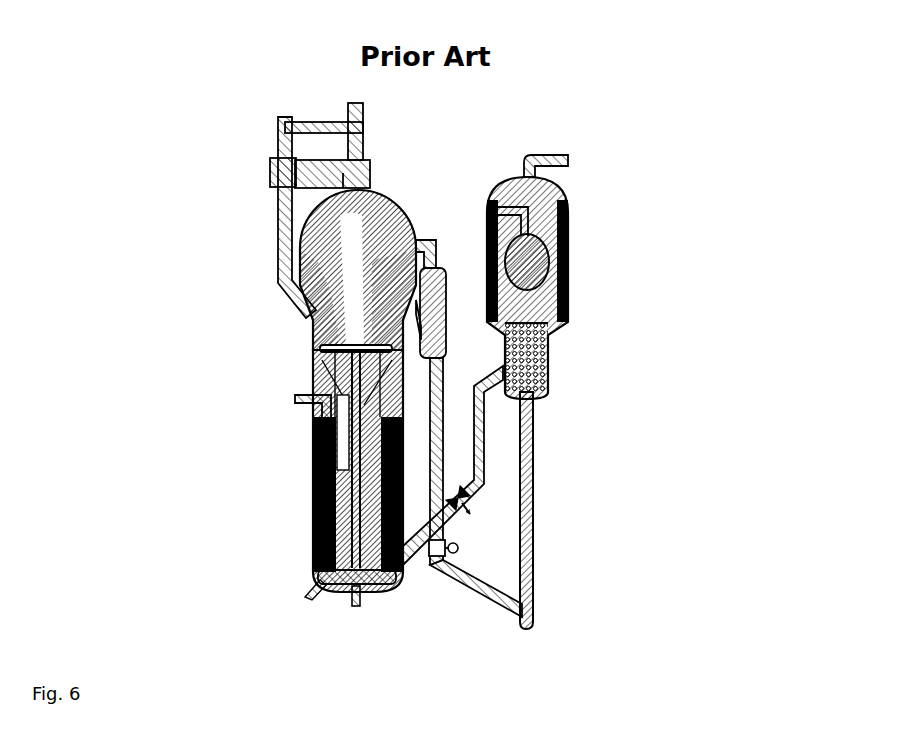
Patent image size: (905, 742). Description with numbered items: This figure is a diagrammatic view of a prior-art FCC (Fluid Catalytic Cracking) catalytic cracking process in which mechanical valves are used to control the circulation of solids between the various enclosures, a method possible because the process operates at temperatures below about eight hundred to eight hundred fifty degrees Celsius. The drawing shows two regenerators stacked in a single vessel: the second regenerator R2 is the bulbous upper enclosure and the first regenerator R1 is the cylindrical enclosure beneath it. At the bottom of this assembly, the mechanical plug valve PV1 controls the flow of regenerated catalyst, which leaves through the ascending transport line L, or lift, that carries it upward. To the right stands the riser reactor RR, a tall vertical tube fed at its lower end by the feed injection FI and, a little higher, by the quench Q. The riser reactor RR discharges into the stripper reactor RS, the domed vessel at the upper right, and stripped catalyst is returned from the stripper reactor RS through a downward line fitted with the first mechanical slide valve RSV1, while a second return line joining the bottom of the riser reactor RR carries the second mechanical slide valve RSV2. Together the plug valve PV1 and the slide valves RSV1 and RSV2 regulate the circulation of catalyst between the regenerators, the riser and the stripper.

The regenerator No. 2 R2 is at (345, 252).
The regenerator No. 1 R1 is at (305, 462).
The stripper reactor RS is at (569, 282).
The riser reactor RR is at (534, 444).
The mechanical slide valve No. 1 RSV1 is at (459, 490).
The mechanical slide valve No. 2 RSV2 is at (434, 560).
The mechanical plug valve PV1 is at (352, 574).
The ascending transport line L is at (355, 597).
The quench Q is at (537, 522).
The feed injection FI is at (536, 572).